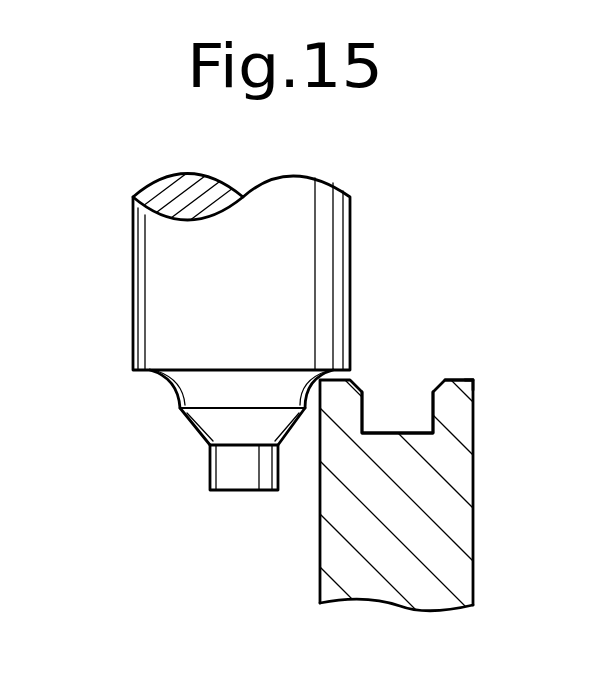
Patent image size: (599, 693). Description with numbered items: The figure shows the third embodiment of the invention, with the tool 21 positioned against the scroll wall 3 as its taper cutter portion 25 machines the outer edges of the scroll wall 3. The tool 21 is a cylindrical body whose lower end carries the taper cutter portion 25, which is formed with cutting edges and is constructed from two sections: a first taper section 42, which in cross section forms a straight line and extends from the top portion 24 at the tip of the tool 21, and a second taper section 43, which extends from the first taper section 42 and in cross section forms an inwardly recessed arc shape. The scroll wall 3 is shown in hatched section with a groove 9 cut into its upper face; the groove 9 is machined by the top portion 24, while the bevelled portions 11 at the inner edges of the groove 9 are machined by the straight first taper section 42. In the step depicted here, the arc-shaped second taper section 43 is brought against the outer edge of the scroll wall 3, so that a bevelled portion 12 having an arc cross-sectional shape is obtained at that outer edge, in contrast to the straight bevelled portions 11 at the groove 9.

The tool 21 is at (352, 246).
The taper cutter portion 25 is at (191, 420).
The second taper section 43 is at (163, 383).
The first taper section 42 is at (192, 432).
The top portion 24 is at (252, 483).
The scroll wall 3 is at (430, 461).
The groove 9 is at (400, 432).
The bevelled portions 11 is at (444, 382).
The bevelled portion 12 is at (474, 381).